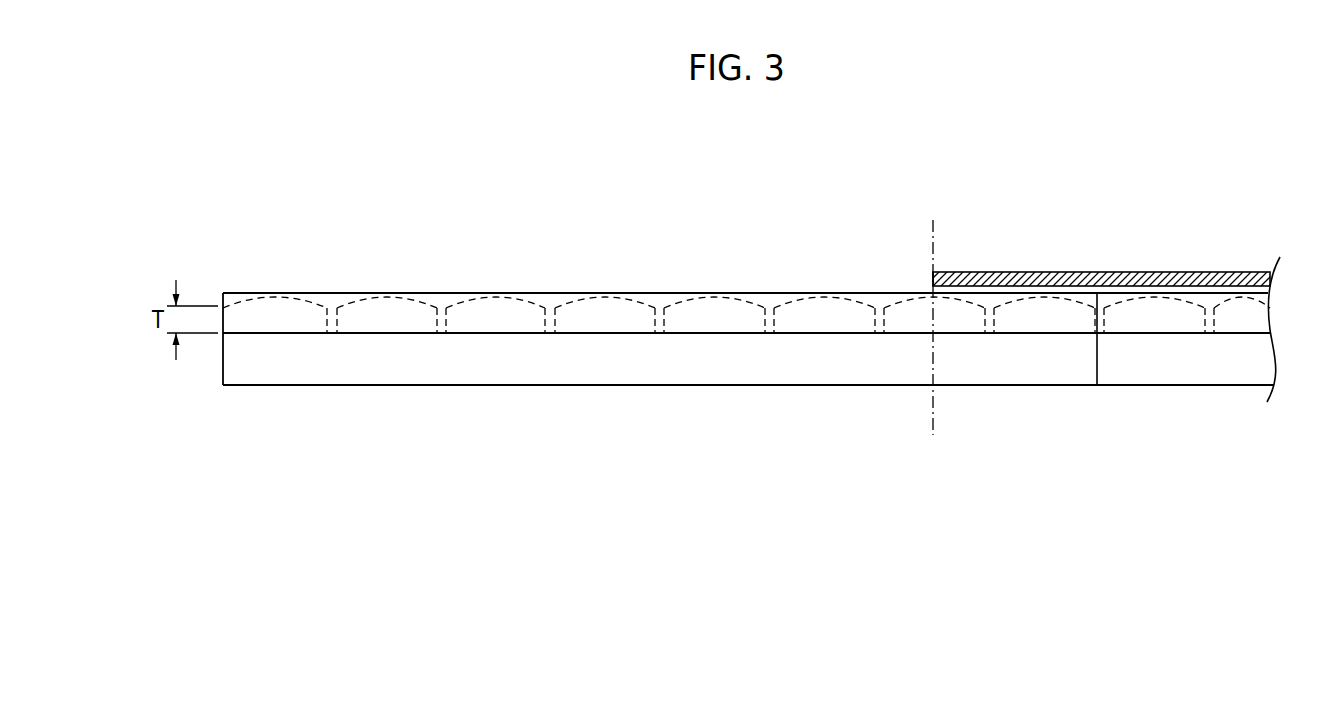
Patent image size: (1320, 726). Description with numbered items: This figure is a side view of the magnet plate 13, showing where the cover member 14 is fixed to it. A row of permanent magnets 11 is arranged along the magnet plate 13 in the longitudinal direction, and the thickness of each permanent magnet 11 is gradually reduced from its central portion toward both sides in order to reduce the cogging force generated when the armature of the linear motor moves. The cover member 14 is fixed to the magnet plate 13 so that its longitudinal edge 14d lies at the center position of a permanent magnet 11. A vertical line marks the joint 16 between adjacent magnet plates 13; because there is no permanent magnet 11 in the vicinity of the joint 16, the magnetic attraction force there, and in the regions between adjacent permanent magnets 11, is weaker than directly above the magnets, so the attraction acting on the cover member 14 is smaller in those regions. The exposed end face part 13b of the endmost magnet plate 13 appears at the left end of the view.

The permanent magnet 11 is at (908, 320).
The magnet plate 13 is at (748, 361).
The end face part 13b is at (223, 378).
The cover member 14 is at (1135, 264).
The edge of the cover member 14d is at (933, 278).
The joint 16 is at (1098, 385).